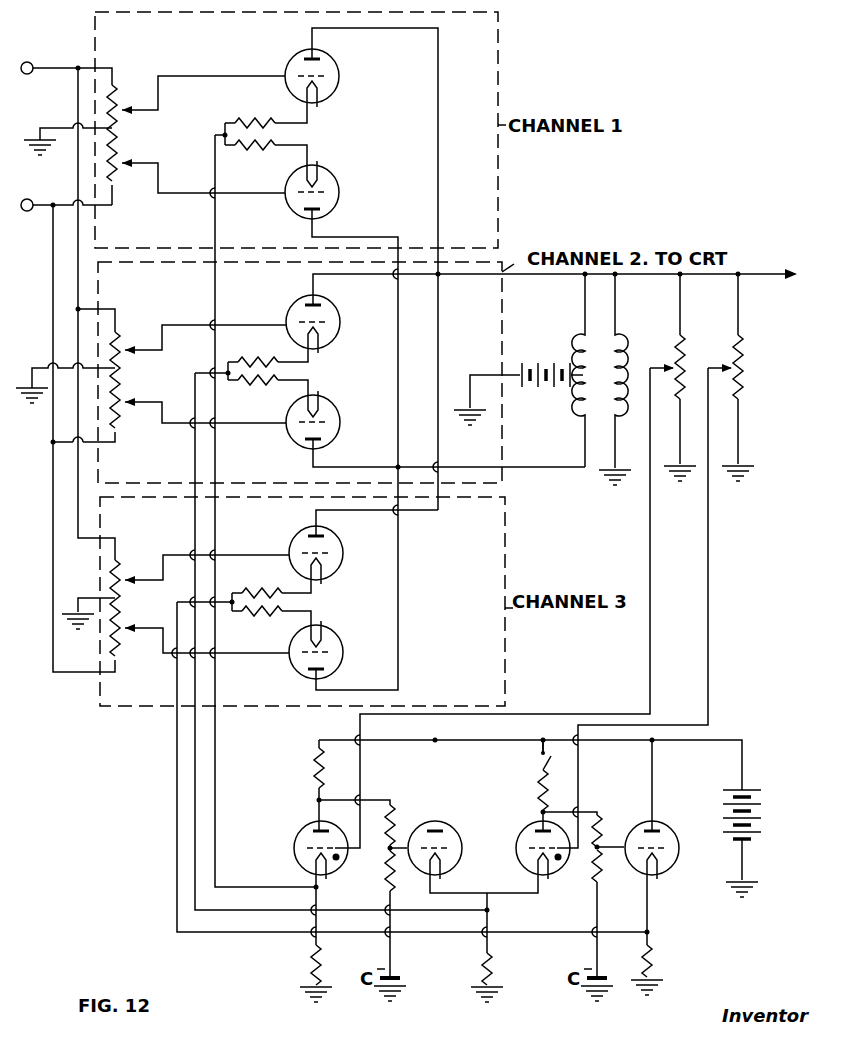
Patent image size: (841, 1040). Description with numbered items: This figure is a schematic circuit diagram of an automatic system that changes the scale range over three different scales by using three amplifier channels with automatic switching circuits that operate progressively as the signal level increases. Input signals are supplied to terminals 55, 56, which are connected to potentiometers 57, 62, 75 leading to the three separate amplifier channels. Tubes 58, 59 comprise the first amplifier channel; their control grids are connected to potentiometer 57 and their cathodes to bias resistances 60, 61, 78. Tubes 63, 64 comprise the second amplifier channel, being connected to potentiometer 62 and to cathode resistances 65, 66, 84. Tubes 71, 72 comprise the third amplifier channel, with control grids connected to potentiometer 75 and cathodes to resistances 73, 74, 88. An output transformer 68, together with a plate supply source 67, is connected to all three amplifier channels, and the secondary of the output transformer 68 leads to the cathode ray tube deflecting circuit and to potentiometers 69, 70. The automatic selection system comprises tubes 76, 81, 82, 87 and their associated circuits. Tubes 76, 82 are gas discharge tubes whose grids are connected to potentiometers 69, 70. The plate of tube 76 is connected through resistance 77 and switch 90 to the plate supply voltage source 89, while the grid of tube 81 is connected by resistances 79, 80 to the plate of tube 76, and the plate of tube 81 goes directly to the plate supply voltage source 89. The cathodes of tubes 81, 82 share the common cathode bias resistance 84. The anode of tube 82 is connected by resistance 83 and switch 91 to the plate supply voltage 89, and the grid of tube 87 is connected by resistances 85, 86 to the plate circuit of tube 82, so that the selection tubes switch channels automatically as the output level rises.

The input terminal 55 is at (32, 55).
The input terminal 56 is at (34, 193).
The potentiometer 57 is at (114, 105).
The tube 58 is at (339, 70).
The tube 59 is at (341, 192).
The bias resistance 60 is at (255, 110).
The bias resistance 61 is at (255, 157).
The potentiometer 62 is at (119, 379).
The tube 63 is at (338, 319).
The tube 64 is at (340, 422).
The cathode resistance 65 is at (259, 352).
The cathode resistance 66 is at (259, 390).
The plate supply source 67 is at (546, 360).
The output transformer 68 is at (585, 338).
The potentiometer 69 is at (682, 377).
The potentiometer 70 is at (743, 377).
The tube 71 is at (340, 542).
The tube 72 is at (344, 652).
The resistance 73 is at (262, 581).
The resistance 74 is at (262, 623).
The potentiometer 75 is at (119, 606).
The gas discharge tube 76 is at (306, 850).
The resistance 77 is at (322, 774).
The bias resistance 78 is at (321, 961).
The resistance 79 is at (392, 814).
The resistance 80 is at (387, 887).
The tube 81 is at (451, 827).
The gas discharge tube 82 is at (530, 832).
The resistance 83 is at (546, 792).
The common cathode bias resistance 84 is at (492, 967).
The resistance 85 is at (599, 823).
The resistance 86 is at (598, 873).
The tube 87 is at (679, 838).
The resistance 88 is at (651, 961).
The plate supply voltage source 89 is at (758, 810).
The switch 90 is at (317, 748).
The switch 91 is at (538, 758).